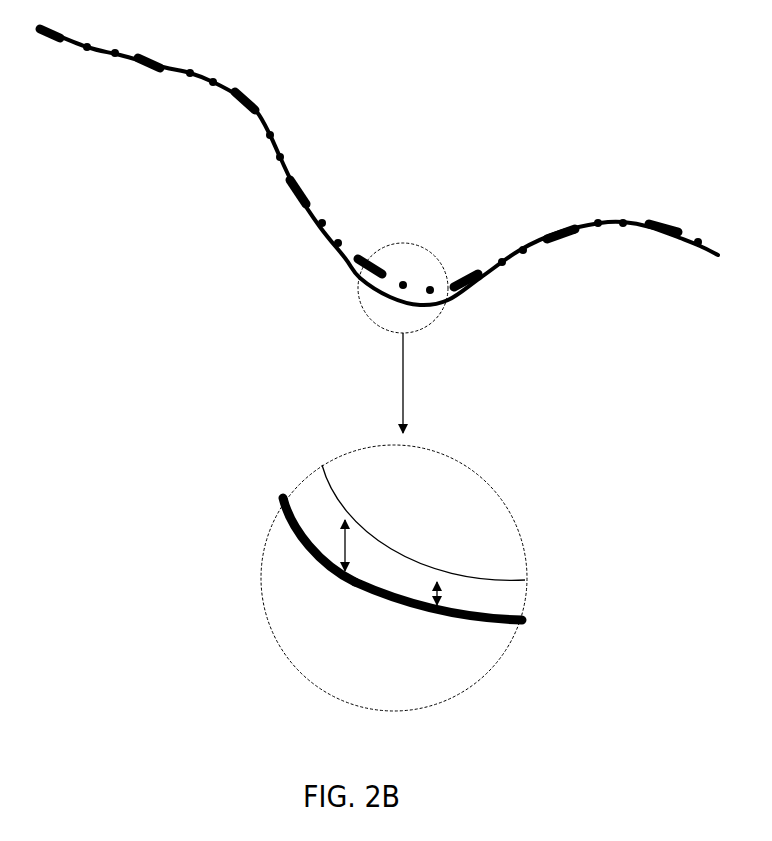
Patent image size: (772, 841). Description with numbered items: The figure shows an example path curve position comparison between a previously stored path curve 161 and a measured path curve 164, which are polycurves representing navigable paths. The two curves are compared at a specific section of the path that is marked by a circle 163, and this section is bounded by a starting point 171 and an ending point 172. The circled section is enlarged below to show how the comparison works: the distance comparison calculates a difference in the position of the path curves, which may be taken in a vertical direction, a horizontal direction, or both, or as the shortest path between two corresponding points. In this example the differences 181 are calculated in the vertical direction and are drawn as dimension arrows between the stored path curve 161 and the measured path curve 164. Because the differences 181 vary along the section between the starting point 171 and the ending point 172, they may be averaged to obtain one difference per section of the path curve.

The previously stored path curve 161 is at (285, 178).
The circle 163 is at (397, 242).
The measured path curve 164 is at (545, 238).
The starting point 171 is at (357, 279).
The ending point 172 is at (448, 302).
The differences 181 is at (346, 518).